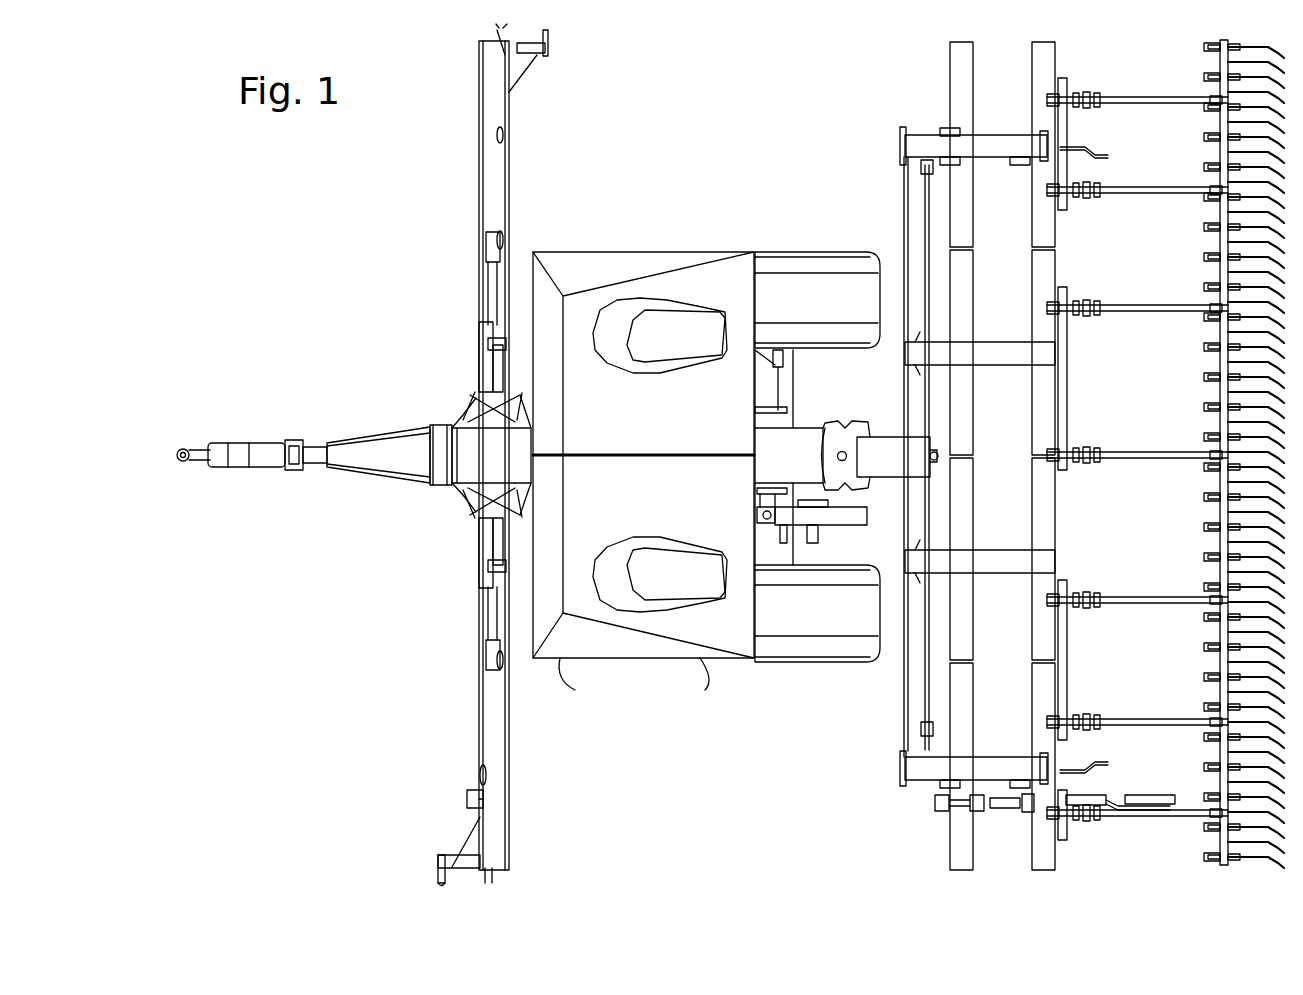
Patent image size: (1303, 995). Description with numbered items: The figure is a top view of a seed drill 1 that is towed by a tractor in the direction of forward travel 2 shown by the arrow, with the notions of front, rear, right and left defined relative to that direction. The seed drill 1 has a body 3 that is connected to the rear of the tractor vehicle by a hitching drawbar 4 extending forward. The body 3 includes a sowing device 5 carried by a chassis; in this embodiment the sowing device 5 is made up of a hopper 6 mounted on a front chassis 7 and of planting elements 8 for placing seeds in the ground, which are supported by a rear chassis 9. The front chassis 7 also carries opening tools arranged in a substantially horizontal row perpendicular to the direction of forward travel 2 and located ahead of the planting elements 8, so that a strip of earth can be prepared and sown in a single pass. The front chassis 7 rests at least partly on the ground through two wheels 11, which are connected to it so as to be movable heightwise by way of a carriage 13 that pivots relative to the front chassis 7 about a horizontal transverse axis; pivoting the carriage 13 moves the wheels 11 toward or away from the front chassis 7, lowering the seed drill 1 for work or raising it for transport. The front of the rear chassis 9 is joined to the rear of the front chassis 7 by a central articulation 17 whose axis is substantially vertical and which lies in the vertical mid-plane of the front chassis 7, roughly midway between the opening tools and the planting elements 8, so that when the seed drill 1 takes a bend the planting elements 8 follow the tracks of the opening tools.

The seed drill 1 is at (380, 667).
The direction of forward travel 2 is at (200, 343).
The body 3 is at (822, 197).
The hitching drawbar 4 is at (267, 445).
The sowing device 5 is at (668, 165).
The hopper 6 is at (553, 662).
The front chassis 7 is at (460, 495).
The planting elements 8 is at (900, 825).
The rear chassis 9 is at (905, 673).
The wheels 11 is at (796, 250).
The carriage 13 is at (793, 552).
The central articulation 17 is at (845, 443).